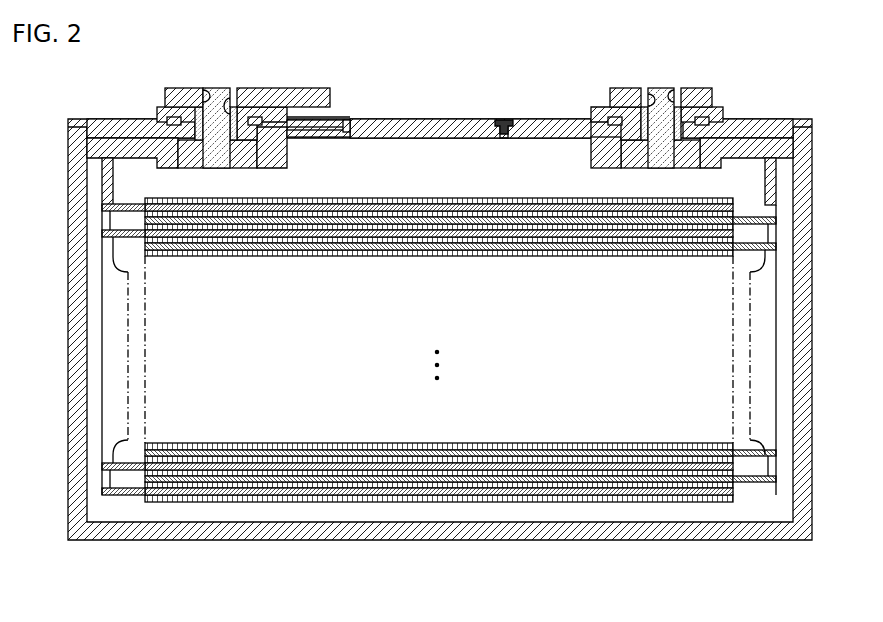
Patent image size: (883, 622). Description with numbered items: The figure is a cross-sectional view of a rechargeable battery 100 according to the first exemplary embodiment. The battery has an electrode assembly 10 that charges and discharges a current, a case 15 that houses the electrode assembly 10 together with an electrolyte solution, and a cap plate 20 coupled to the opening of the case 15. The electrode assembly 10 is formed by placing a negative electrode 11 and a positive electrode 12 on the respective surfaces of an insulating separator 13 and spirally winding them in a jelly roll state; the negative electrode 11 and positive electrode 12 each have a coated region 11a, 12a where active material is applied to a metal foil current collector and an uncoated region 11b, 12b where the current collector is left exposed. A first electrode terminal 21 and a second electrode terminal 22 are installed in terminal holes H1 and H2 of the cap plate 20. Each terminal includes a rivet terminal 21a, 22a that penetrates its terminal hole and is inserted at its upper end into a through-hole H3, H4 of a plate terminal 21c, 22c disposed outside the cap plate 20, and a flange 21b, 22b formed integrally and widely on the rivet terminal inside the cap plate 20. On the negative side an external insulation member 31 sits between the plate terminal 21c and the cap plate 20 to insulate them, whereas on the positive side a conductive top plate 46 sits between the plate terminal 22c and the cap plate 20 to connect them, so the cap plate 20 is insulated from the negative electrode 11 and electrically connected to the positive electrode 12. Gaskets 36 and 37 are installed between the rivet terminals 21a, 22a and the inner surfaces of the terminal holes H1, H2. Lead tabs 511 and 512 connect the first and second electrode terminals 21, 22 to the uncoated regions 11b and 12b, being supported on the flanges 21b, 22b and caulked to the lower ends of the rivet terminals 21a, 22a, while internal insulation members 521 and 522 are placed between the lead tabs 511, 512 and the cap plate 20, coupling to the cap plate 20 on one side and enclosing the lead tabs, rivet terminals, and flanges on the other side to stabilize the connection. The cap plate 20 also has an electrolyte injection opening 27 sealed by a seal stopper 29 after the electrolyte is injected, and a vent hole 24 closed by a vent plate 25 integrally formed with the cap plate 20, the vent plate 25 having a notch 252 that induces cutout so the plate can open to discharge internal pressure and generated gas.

The rechargeable battery 100 is at (458, 37).
The electrode assembly 10 is at (439, 403).
The negative electrode 11 is at (417, 406).
The coated region 11a is at (208, 495).
The uncoated region 11b is at (125, 394).
The positive electrode 12 is at (460, 407).
The coated region 12a is at (673, 482).
The uncoated region 12b is at (755, 482).
The separator 13 is at (473, 500).
The case 15 is at (803, 247).
The cap plate 20 is at (547, 125).
The first electrode terminal 21 is at (241, 172).
The rivet terminal 21a is at (212, 170).
The flange 21b is at (245, 155).
The plate terminal 21c is at (277, 95).
The second electrode terminal 22 is at (671, 172).
The rivet terminal 22a is at (660, 168).
The flange 22b is at (635, 153).
The plate terminal 22c is at (703, 95).
The vent hole 24 is at (330, 137).
The vent plate 25 is at (308, 118).
The notch 252 is at (347, 127).
The electrolyte injection opening 27 is at (503, 138).
The seal stopper 29 is at (504, 120).
The external insulation member 31 is at (160, 112).
The gasket 36 is at (197, 112).
The gasket 37 is at (708, 113).
The conductive top plate 46 is at (605, 110).
The lead tab 511 is at (107, 187).
The lead tab 512 is at (768, 190).
The internal insulation member 521 is at (97, 148).
The internal insulation member 522 is at (782, 148).
The terminal hole H1 is at (226, 105).
The terminal hole H2 is at (647, 100).
The through-hole H3 is at (207, 92).
The through-hole H4 is at (676, 88).